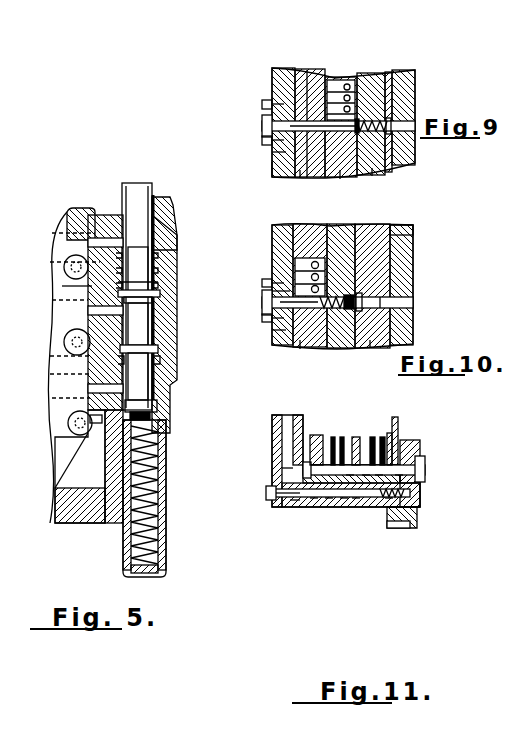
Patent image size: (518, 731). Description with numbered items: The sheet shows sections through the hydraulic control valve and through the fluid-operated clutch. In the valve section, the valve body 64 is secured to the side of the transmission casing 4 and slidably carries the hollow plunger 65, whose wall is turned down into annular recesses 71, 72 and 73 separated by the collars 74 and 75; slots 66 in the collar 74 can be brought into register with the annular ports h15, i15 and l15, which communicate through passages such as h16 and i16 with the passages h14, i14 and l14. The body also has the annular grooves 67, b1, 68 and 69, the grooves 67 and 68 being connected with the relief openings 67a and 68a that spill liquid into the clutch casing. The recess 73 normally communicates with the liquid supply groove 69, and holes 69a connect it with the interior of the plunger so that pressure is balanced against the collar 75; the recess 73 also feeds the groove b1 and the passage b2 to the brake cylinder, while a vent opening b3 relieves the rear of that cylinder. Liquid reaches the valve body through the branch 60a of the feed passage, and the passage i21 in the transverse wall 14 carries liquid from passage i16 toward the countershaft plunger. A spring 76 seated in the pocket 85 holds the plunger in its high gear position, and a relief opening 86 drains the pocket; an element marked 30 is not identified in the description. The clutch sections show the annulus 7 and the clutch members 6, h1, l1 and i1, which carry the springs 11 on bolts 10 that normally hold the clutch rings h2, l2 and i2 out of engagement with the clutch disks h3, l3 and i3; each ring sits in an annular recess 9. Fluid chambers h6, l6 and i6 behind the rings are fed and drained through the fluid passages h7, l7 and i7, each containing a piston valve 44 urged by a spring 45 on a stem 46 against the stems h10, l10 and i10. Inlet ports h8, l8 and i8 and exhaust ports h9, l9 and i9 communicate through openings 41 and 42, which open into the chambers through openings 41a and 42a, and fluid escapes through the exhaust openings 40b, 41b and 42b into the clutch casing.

In FIG. 5, the transmission casing 4 is at (74, 208).
In FIG. 5, the hollow plunger 65 is at (144, 185).
In FIG. 5, the passage h16 is at (105, 215).
In FIG. 5, the annular groove 67 is at (174, 226).
In FIG. 5, the relief opening 67a is at (68, 222).
In FIG. 5, the passage h14 is at (70, 233).
In FIG. 5, the transverse wall 14 is at (90, 242).
In FIG. 5, the passage l14 is at (64, 267).
In FIG. 5, the relief opening 68a is at (70, 300).
In FIG. 5, the collar 74 is at (94, 290).
In FIG. 5, the passage i14 is at (90, 311).
In FIG. 5, the passage b2 is at (64, 342).
In FIG. 5, the holes 69a is at (68, 356).
In FIG. 5, the branch of the feed passage 60a is at (70, 374).
In FIG. 5, the collar 75 is at (118, 376).
In FIG. 5, the passage i16 is at (90, 389).
In FIG. 5, the passage i21 is at (70, 424).
In FIG. 5, the vent opening b3 is at (70, 446).
In FIG. 5, the relief opening 86 is at (56, 490).
In FIG. 5, the frame 30 is at (10, 490).
In FIG. 5, the annular recess 71 is at (178, 246).
In FIG. 5, the annular port h15 is at (160, 257).
In FIG. 5, the annular port i15 is at (160, 270).
In FIG. 5, the annular port l15 is at (160, 283).
In FIG. 5, the slots 66 is at (162, 294).
In FIG. 5, the annular groove 68 is at (160, 302).
In FIG. 5, the annular recess 72 is at (150, 322).
In FIG. 5, the annular groove b1 is at (160, 349).
In FIG. 5, the liquid supply groove 69 is at (162, 360).
In FIG. 5, the annular recess 73 is at (150, 377).
In FIG. 5, the valve body 64 is at (170, 418).
In FIG. 5, the spring 76 is at (158, 466).
In FIG. 5, the pocket 85 is at (166, 550).
In FIG. 9, the piston valve 44 is at (274, 72).
In FIG. 10, the piston valve 44 is at (274, 346).
In FIG. 11, the piston valve 44 is at (400, 478).
In FIG. 9, the opening 41 is at (286, 75).
In FIG. 9, the fluid passage l7 is at (274, 98).
In FIG. 9, the port l8 is at (322, 78).
In FIG. 9, the fluid chamber l6 is at (337, 78).
In FIG. 10, the fluid chamber l6 is at (334, 348).
In FIG. 11, the fluid chamber l6 is at (350, 478).
In FIG. 9, the port l9 is at (390, 122).
In FIG. 9, the clutch member 6 is at (402, 166).
In FIG. 11, the clutch member 6 is at (390, 502).
In FIG. 9, the spring 45 is at (412, 132).
In FIG. 10, the spring 45 is at (412, 333).
In FIG. 11, the spring 45 is at (418, 515).
In FIG. 9, the opening 41a is at (380, 108).
In FIG. 9, the exhaust opening 41b is at (393, 119).
In FIG. 9, the stem l10 is at (274, 153).
In FIG. 9, the annulus 7 is at (272, 172).
In FIG. 11, the annulus 7 is at (282, 452).
In FIG. 9, the clutch member i1 is at (300, 178).
In FIG. 11, the clutch member i1 is at (314, 502).
In FIG. 9, the clutch member l1 is at (340, 179).
In FIG. 11, the clutch member l1 is at (344, 502).
In FIG. 9, the clutch member h1 is at (372, 176).
In FIG. 11, the clutch member h1 is at (366, 478).
In FIG. 10, the opening 42 is at (283, 270).
In FIG. 10, the port i8 is at (298, 260).
In FIG. 10, the stem 46 is at (412, 304).
In FIG. 10, the port i9 is at (412, 250).
In FIG. 10, the opening 42a is at (380, 287).
In FIG. 10, the exhaust opening 42b is at (385, 295).
In FIG. 10, the fluid passage i7 is at (274, 295).
In FIG. 10, the stem i10 is at (276, 330).
In FIG. 10, the fluid chamber i6 is at (300, 349).
In FIG. 11, the fluid chamber i6 is at (300, 505).
In FIG. 10, the fluid chamber h6 is at (370, 348).
In FIG. 11, the fluid chamber h6 is at (379, 478).
In FIG. 11, the fluid passage h7 is at (286, 470).
In FIG. 11, the bolt 10 is at (420, 458).
In FIG. 11, the clutch disk h3 is at (399, 428).
In FIG. 11, the spring 11 is at (468, 499).
In FIG. 11, the exhaust opening 40b is at (412, 528).
In FIG. 11, the port h9 is at (422, 508).
In FIG. 11, the clutch ring i2 is at (316, 435).
In FIG. 11, the clutch disk i3 is at (333, 437).
In FIG. 11, the clutch ring l2 is at (342, 437).
In FIG. 11, the clutch disk l3 is at (373, 437).
In FIG. 11, the clutch ring h2 is at (389, 433).
In FIG. 11, the stem h10 is at (290, 497).
In FIG. 11, the annular recess 9 is at (328, 502).
In FIG. 11, the port h8 is at (357, 502).